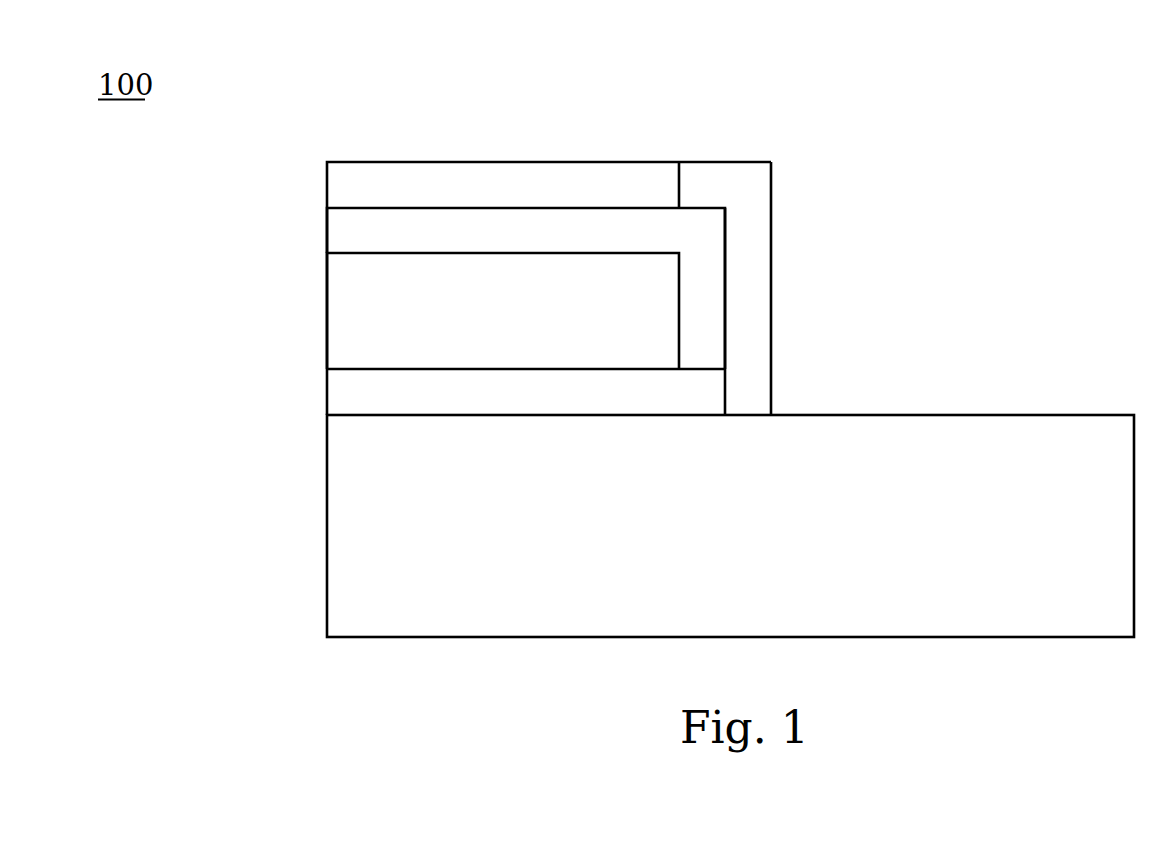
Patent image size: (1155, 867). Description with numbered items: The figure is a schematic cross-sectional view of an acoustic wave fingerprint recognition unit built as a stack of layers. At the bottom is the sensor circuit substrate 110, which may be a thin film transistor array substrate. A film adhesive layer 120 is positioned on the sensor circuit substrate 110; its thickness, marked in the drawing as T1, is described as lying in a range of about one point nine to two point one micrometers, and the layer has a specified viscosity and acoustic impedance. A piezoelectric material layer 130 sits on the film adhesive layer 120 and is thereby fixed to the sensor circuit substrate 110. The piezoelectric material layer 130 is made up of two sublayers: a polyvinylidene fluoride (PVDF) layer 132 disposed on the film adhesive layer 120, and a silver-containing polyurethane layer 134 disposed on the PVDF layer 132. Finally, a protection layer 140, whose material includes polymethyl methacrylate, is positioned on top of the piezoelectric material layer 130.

The sensor circuit substrate 110 is at (327, 537).
The film adhesive layer 120 is at (702, 388).
The piezoelectric material layer 130 is at (187, 212).
The polyvinylidene fluoride (PVDF) layer 132 is at (327, 291).
The silver-containing polyurethane (Ag-containing PU) layer 134 is at (327, 232).
The protection layer 140 is at (327, 183).
The thickness T1 is at (300, 369).